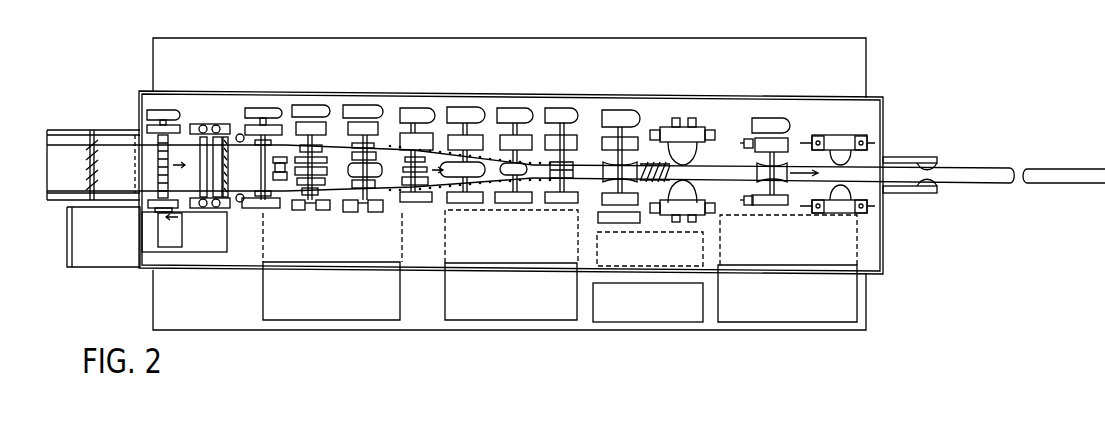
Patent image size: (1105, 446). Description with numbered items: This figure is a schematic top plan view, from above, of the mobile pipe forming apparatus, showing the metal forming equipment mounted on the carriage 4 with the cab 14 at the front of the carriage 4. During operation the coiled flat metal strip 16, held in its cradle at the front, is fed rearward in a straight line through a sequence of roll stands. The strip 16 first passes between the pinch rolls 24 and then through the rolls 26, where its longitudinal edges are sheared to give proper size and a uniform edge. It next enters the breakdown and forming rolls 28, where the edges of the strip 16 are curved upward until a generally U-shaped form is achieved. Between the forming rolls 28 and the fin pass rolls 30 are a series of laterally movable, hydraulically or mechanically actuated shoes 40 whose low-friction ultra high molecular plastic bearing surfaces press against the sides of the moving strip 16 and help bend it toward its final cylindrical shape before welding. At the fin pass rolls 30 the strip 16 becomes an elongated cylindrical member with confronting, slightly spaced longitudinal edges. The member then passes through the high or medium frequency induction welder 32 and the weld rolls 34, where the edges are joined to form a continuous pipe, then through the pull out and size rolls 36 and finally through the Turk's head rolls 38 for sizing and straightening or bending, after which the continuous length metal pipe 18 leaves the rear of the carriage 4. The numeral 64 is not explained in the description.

The carriage 4 is at (148, 262).
The cab 14 is at (70, 268).
The coil of flat strip metal material 16 is at (76, 152).
The continuous length metal pipe 18 is at (988, 168).
The pinch rolls 24 is at (158, 157).
The rolls 26 is at (253, 107).
The breakdown and forming rolls 28 is at (488, 112).
The fin pass rolls 30 is at (595, 112).
The induction welder 32 is at (648, 155).
The weld rolls 34 is at (703, 150).
The pull out and size rolls 36 is at (792, 140).
The Turk's head rolls 38 is at (852, 173).
The shoes 40 is at (513, 112).
The guide roller 64 is at (252, 190).